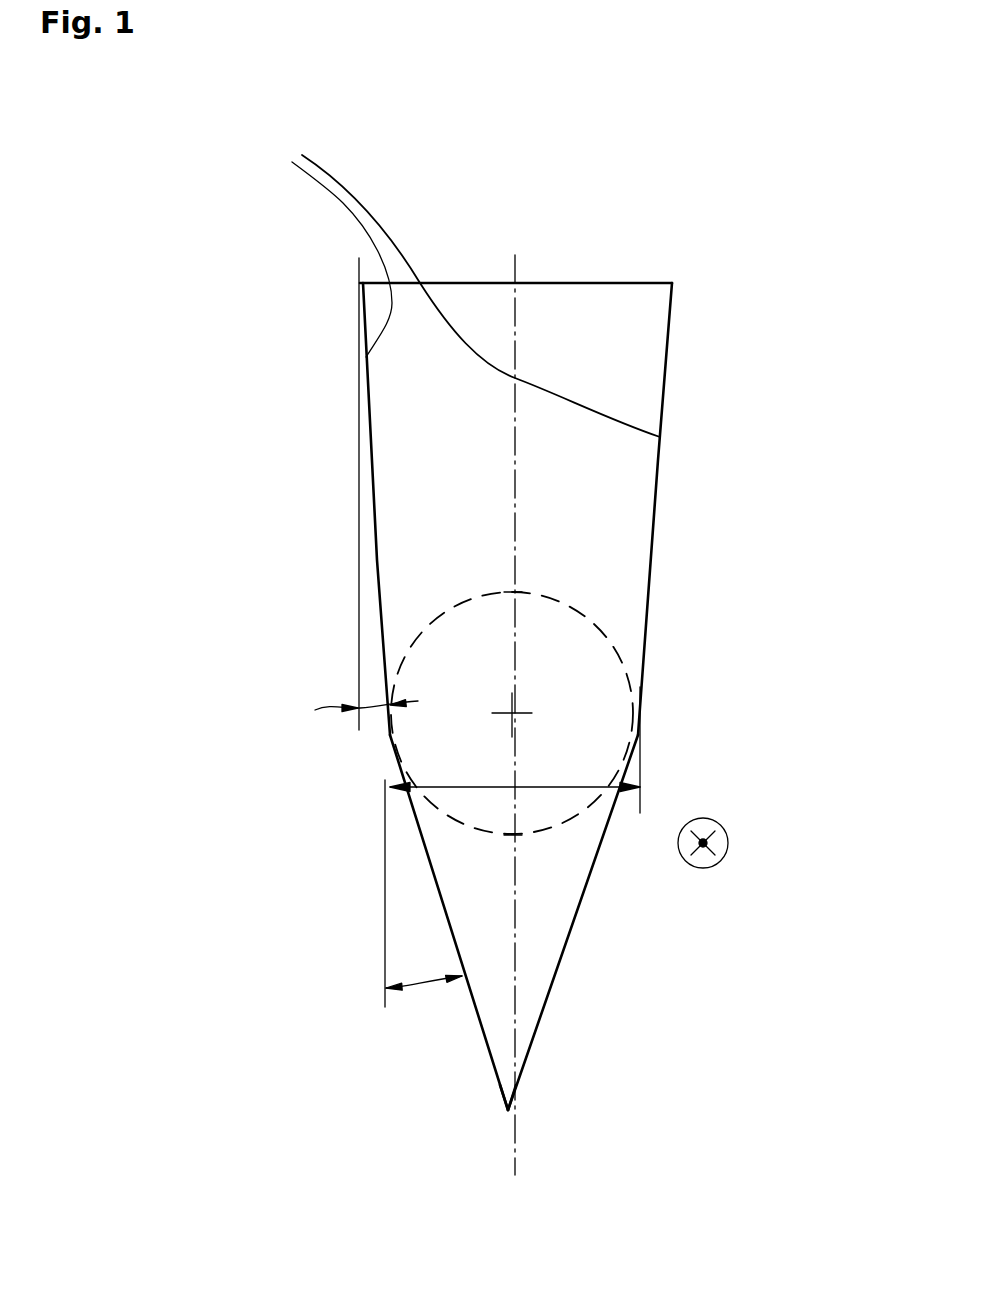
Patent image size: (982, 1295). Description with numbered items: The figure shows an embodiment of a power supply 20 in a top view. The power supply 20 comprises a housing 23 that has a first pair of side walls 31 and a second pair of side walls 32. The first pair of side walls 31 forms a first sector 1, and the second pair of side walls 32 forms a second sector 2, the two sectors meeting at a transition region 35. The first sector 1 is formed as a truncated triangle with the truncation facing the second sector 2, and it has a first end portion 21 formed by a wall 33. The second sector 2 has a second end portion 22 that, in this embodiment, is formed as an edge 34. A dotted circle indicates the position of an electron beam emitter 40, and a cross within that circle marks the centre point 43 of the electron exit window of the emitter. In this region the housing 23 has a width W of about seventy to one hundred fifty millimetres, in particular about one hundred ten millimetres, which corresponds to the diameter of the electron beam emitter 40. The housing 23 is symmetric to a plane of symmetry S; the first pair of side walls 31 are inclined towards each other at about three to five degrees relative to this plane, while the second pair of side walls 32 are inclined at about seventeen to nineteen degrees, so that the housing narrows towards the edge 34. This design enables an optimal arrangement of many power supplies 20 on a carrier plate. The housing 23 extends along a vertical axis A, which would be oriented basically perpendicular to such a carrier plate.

The first sector 1 is at (320, 418).
The second sector 2 is at (348, 915).
The power supply 20 is at (737, 406).
The first end portion 21 is at (663, 252).
The second end portion 22 is at (483, 1130).
The housing 23 is at (661, 493).
The first pair of side walls 31 is at (449, 427).
The second pair of side walls 32 is at (453, 930).
The wall 33 is at (453, 281).
The edge 34 is at (508, 1112).
The transition region 35 is at (640, 731).
The electron beam emitter 40 is at (600, 622).
The centre point of electron exit window 43 is at (512, 713).
The plane of symmetry S is at (515, 268).
The width of the housing W is at (570, 783).
The vertical axis A is at (697, 858).